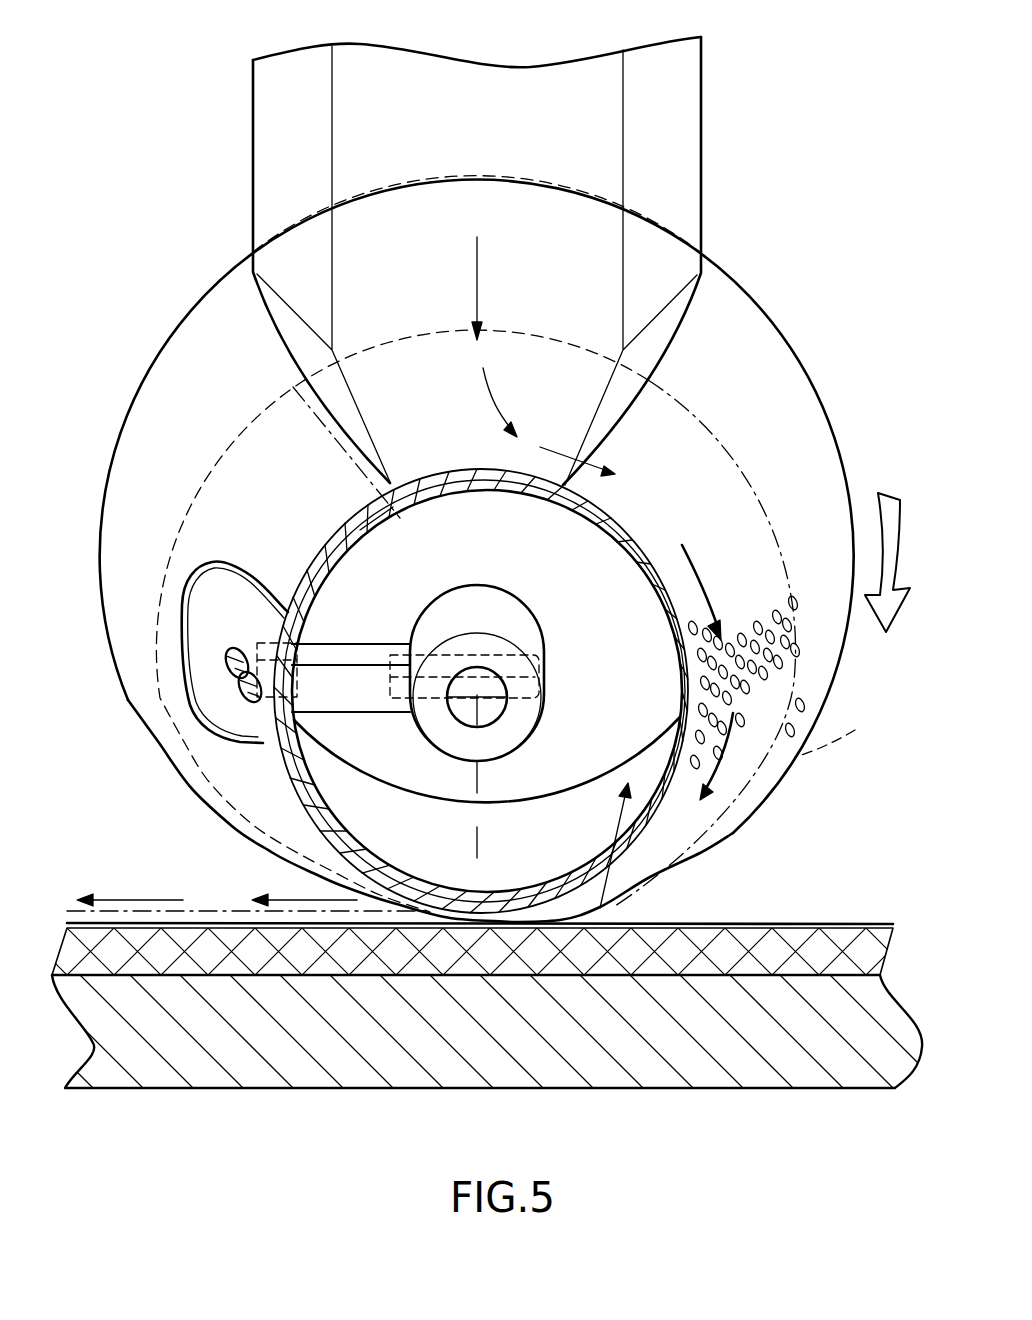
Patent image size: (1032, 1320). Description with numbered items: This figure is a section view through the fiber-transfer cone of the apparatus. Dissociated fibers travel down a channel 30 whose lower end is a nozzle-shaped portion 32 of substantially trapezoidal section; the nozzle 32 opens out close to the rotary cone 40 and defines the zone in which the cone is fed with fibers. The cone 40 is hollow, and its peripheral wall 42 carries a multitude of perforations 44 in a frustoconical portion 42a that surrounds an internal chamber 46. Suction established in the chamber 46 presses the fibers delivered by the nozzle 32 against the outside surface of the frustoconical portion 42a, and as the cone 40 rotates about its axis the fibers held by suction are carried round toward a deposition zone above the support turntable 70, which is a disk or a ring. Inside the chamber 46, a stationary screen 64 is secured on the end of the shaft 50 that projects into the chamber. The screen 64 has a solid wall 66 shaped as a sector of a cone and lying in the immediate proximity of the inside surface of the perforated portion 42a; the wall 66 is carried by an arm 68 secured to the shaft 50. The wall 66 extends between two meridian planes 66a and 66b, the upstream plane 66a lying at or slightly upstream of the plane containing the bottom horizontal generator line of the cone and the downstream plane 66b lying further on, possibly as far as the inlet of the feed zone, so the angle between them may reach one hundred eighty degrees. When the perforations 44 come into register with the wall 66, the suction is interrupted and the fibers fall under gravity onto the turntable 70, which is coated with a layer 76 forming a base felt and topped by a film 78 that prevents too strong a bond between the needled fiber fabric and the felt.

The channel 30 is at (693, 130).
The nozzle-shaped portion 32 is at (655, 343).
The rotary cone 40 is at (186, 301).
The peripheral wall 42 is at (790, 358).
The frustoconical portion 42a is at (598, 910).
The perforations 44 is at (780, 662).
The internal chamber 46 is at (677, 847).
The shaft 50 is at (487, 597).
The stationary screen 64 is at (322, 617).
The solid wall 66 is at (348, 848).
The upstream meridian plane 66a is at (543, 893).
The downstream meridian plane 66b is at (393, 507).
The arm 68 is at (360, 700).
The support turntable 70 is at (247, 1067).
The layer forming a base felt 76 is at (840, 933).
The film 78 is at (783, 922).